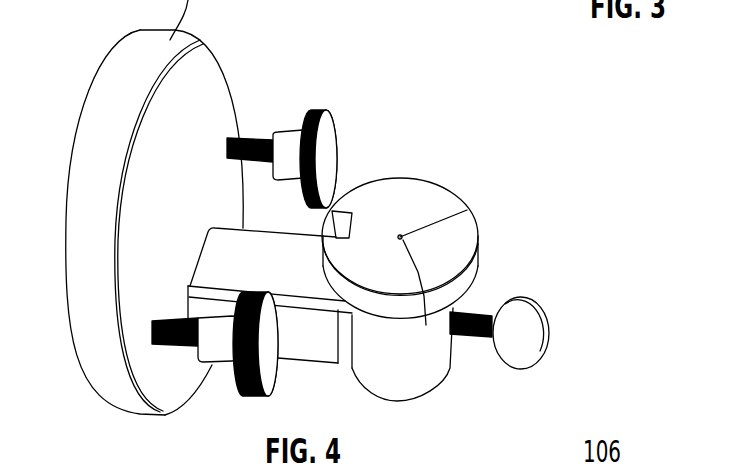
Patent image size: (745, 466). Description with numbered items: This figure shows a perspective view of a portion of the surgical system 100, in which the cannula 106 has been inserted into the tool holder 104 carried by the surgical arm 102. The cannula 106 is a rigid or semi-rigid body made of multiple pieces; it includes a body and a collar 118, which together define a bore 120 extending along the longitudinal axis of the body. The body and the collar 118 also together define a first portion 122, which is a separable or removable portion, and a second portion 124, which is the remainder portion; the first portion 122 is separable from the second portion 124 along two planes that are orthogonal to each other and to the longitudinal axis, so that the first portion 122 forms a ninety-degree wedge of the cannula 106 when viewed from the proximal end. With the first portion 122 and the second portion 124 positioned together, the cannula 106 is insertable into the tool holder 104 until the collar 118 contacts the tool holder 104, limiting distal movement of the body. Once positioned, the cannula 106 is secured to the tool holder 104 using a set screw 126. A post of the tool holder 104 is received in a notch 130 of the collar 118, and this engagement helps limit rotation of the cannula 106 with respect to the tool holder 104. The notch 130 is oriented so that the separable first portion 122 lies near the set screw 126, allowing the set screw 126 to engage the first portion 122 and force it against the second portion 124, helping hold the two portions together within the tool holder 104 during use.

The surgical system 100 is at (378, 34).
The surgical arm 102 is at (138, 37).
The tool holder 104 is at (432, 367).
The cannula 106 is at (445, 215).
The collar 118 is at (411, 175).
The bore 120 is at (458, 193).
The first portion 122 is at (453, 249).
The second portion 124 is at (411, 198).
The set screw 126 is at (527, 340).
The notch 130 is at (342, 218).